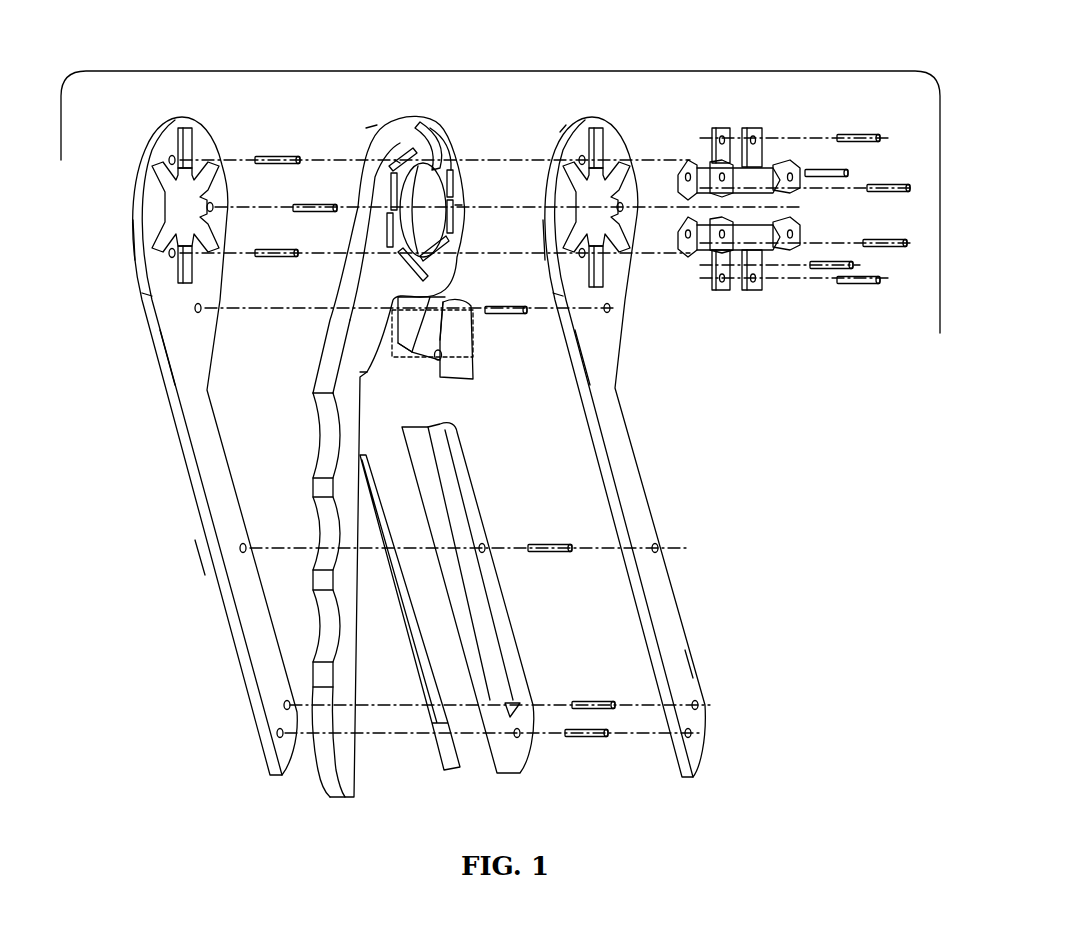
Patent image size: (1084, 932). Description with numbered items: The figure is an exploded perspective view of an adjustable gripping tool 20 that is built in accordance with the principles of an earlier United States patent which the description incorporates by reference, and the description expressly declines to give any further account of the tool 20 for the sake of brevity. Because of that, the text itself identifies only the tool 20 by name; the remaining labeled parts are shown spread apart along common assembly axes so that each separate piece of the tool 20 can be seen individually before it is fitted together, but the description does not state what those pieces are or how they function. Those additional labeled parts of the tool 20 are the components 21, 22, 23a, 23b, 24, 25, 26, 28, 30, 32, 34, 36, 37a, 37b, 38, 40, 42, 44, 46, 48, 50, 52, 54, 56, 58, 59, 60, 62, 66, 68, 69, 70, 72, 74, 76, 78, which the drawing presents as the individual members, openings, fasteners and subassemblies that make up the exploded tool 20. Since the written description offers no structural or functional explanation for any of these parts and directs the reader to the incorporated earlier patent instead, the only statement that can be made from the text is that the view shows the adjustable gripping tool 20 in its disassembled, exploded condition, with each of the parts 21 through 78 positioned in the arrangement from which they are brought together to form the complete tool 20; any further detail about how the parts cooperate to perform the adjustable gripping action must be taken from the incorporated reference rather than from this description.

The adjustable gripping tool 20 is at (460, 71).
The handle arm 21 is at (205, 472).
The handle 22 is at (220, 653).
The handle edge 23a is at (692, 675).
The handle edge 23b is at (205, 572).
The central body 24 is at (330, 792).
The scalloped grip edge 25 is at (357, 685).
The jaw assembly 26 is at (772, 204).
The handle head 28 is at (565, 124).
The star-shaped opening 30 is at (178, 205).
The slot 32 is at (150, 228).
The cross bar 34 is at (780, 226).
The jaw member 36 is at (755, 127).
The tab 37a is at (765, 140).
The tab 37b is at (718, 128).
The pin 38 is at (876, 190).
The pivot block 40 is at (782, 170).
The central head 42 is at (362, 128).
The central aperture 44 is at (446, 165).
The prong 46 is at (408, 147).
The notch 48 is at (393, 160).
The ramp 50 is at (426, 121).
The tab 52 is at (438, 128).
The finger 54 is at (420, 198).
The finger 56 is at (393, 190).
The pin 58 is at (276, 158).
The lug 59 is at (445, 297).
The head portion 60 is at (175, 268).
The bar 62 is at (470, 480).
The pin 66 is at (552, 552).
The hole 68 is at (245, 546).
The ridge 69 is at (445, 455).
The cam member 70 is at (480, 373).
The pin 72 is at (498, 310).
The hole 74 is at (202, 310).
The ramp surface 76 is at (416, 360).
The face 78 is at (470, 340).